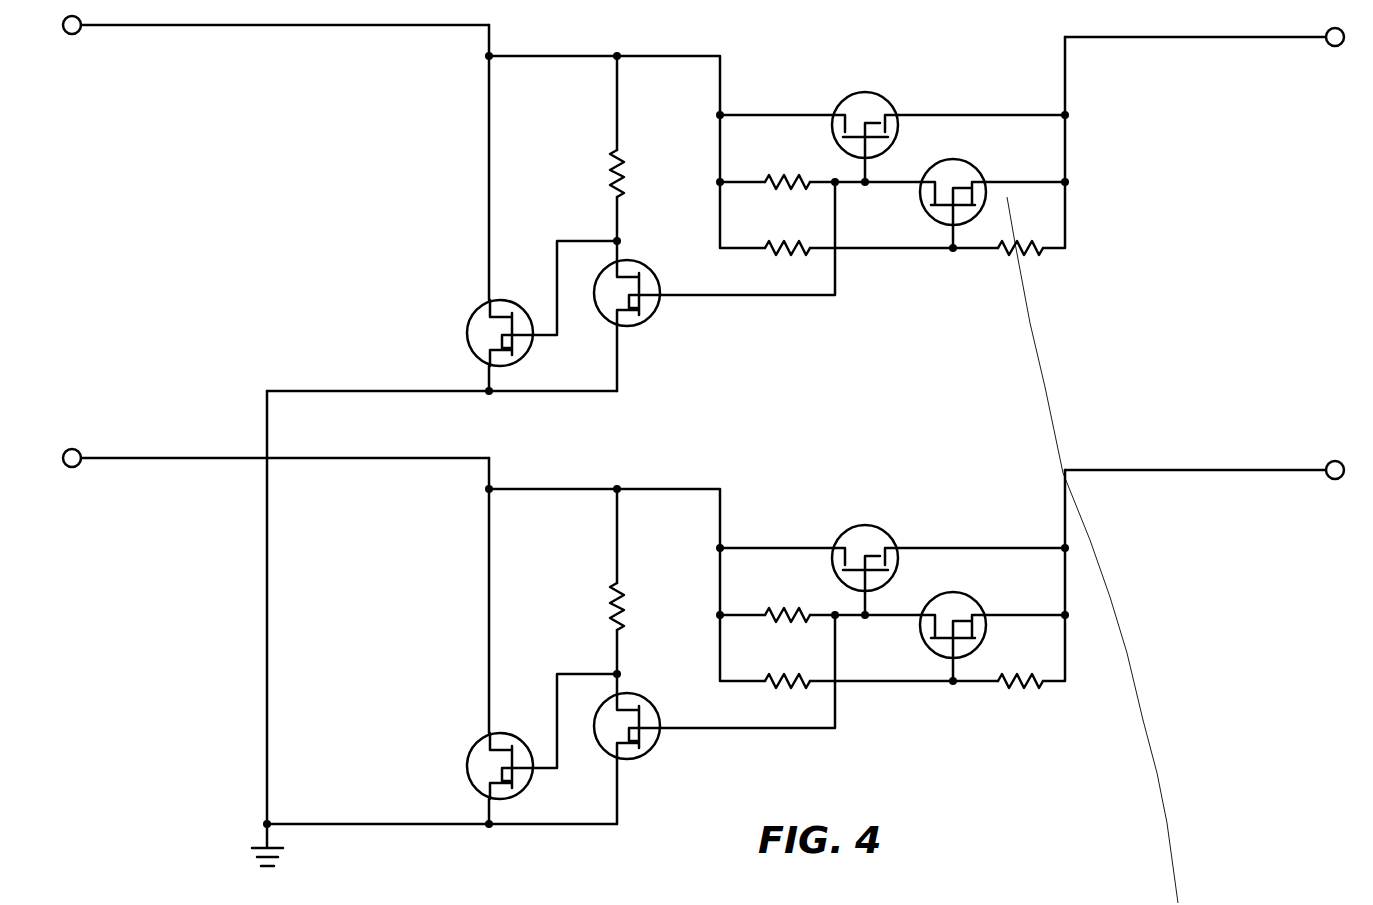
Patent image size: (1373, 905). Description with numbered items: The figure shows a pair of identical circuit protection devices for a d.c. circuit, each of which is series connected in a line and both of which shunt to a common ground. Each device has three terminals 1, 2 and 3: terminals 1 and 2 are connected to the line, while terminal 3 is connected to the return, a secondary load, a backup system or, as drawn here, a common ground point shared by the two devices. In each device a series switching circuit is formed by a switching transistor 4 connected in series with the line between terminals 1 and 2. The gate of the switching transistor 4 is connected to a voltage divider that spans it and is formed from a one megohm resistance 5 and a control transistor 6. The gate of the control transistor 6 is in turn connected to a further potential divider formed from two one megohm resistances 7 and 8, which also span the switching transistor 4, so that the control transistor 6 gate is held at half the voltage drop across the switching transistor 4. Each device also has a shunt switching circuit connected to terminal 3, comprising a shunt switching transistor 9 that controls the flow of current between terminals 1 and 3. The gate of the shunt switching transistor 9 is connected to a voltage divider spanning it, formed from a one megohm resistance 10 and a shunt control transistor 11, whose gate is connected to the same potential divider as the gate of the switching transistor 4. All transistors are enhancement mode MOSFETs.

The terminal 1 is at (353, 25).
The terminal 2 is at (1083, 37).
The terminal 3 is at (372, 390).
The switching transistor 4 is at (884, 98).
The resistance 5 is at (790, 178).
The control transistor 6 is at (975, 170).
The resistance 7 is at (788, 244).
The resistance 8 is at (1022, 254).
The shunt switching transistor 9 is at (505, 301).
The resistance 10 is at (612, 168).
The shunt control transistor 11 is at (640, 322).